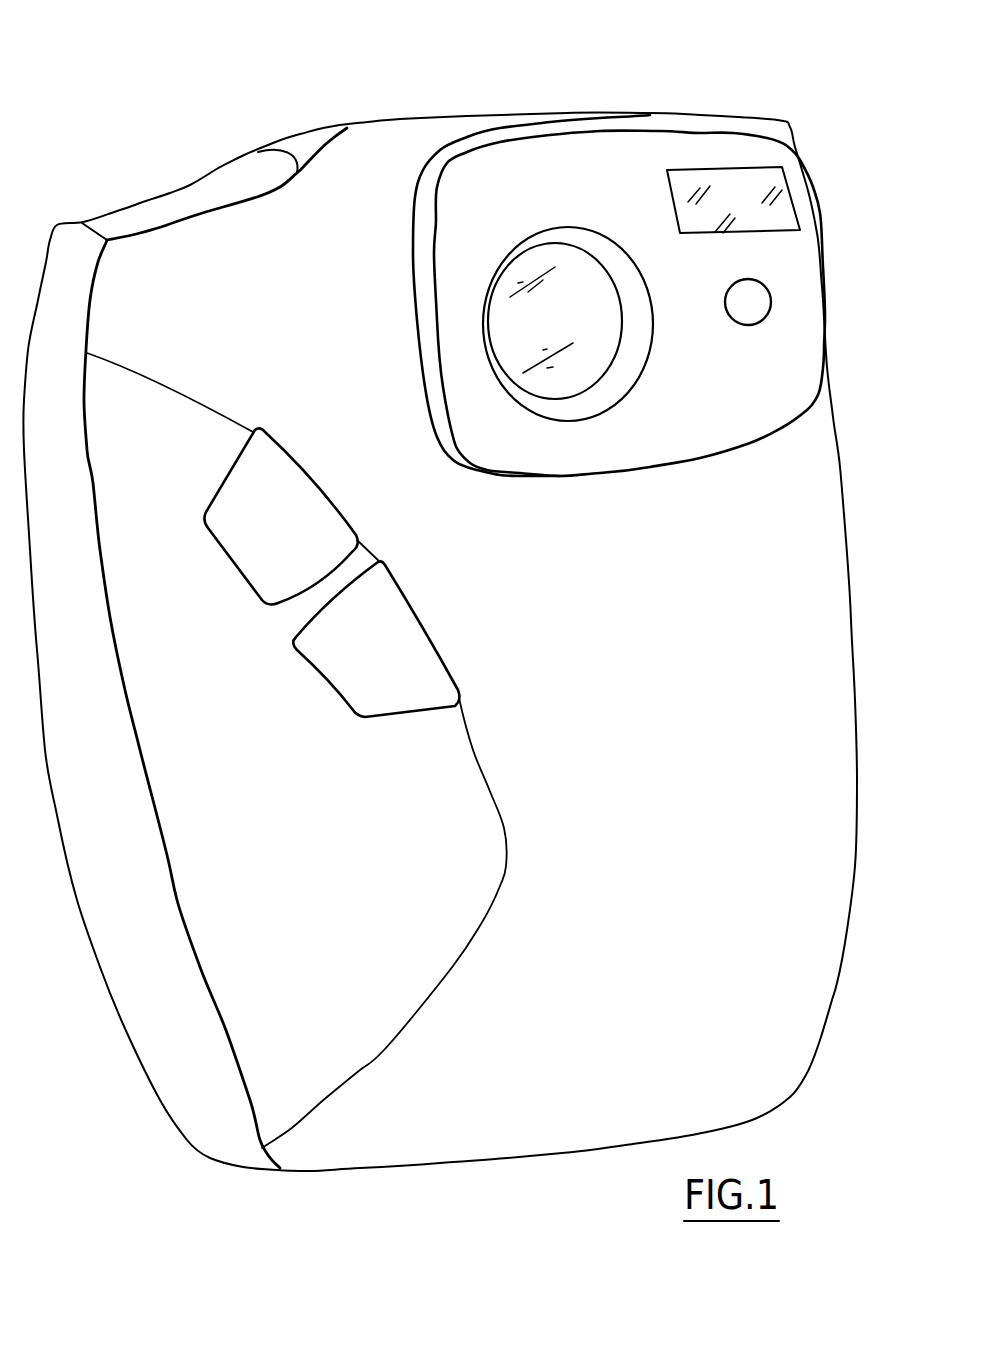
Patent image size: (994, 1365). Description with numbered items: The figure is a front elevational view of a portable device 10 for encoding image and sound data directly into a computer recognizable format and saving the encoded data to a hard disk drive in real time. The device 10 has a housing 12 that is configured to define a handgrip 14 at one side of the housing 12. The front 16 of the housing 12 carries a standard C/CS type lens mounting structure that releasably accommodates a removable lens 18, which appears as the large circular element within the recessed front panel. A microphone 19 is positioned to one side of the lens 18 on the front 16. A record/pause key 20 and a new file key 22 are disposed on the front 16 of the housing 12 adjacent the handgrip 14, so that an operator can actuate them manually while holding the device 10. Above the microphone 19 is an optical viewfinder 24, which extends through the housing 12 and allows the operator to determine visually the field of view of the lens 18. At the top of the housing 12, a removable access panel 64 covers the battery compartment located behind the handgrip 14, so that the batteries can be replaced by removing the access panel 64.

The device 10 is at (762, 100).
The housing 12 is at (392, 112).
The handgrip 14 is at (450, 961).
The front 16 is at (787, 837).
The lens 18 is at (592, 277).
The microphone 19 is at (755, 305).
The record/pause key 20 is at (302, 537).
The new file key 22 is at (405, 669).
The optical viewfinder 24 is at (792, 200).
The removable access panel 64 is at (196, 188).